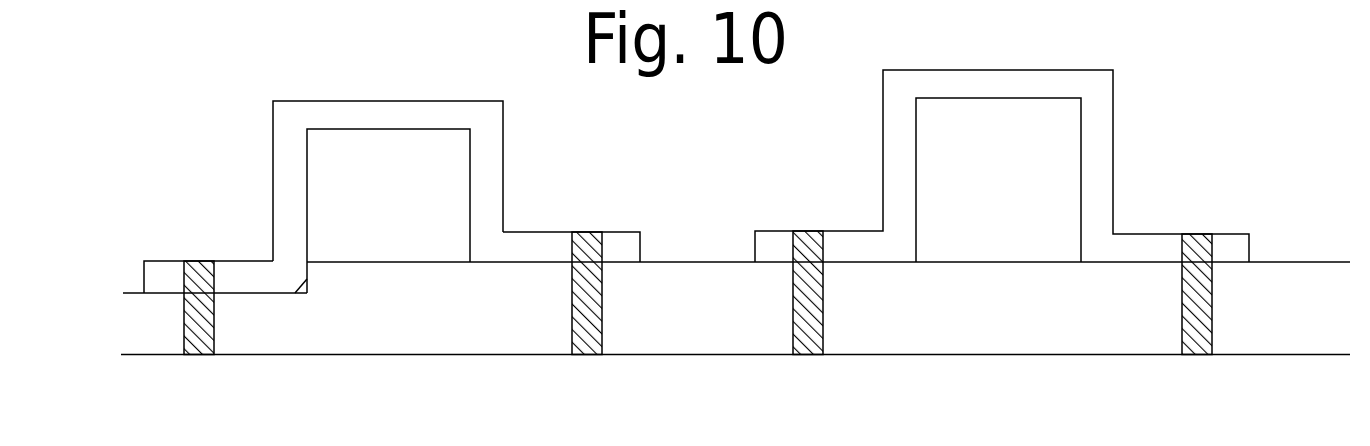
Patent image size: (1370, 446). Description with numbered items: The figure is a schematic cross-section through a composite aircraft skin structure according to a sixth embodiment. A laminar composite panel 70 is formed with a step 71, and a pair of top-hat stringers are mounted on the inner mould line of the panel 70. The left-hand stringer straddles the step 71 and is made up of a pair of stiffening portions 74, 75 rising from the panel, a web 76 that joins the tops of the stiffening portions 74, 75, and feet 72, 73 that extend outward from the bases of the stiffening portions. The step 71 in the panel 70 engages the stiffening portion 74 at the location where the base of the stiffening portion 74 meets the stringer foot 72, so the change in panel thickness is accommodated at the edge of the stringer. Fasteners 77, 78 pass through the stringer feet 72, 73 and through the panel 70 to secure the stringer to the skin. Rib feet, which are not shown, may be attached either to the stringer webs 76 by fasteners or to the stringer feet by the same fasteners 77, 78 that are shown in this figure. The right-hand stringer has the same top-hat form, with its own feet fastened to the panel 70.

The laminar composite panel 70 is at (475, 323).
The step 71 is at (303, 280).
The stringer foot 72 is at (225, 272).
The stringer foot 73 is at (537, 243).
The stiffening portion 74 is at (292, 205).
The stiffening portion 75 is at (487, 177).
The web 76 is at (375, 112).
The fastener 77 is at (198, 353).
The fastener 78 is at (582, 353).